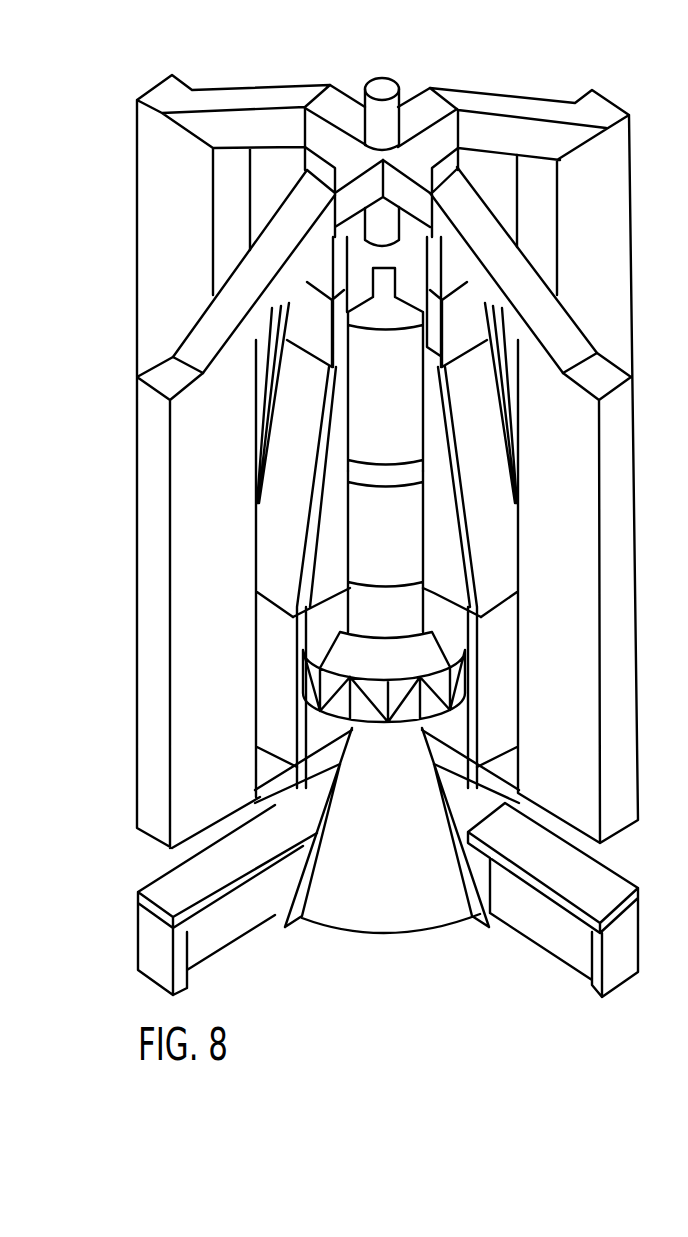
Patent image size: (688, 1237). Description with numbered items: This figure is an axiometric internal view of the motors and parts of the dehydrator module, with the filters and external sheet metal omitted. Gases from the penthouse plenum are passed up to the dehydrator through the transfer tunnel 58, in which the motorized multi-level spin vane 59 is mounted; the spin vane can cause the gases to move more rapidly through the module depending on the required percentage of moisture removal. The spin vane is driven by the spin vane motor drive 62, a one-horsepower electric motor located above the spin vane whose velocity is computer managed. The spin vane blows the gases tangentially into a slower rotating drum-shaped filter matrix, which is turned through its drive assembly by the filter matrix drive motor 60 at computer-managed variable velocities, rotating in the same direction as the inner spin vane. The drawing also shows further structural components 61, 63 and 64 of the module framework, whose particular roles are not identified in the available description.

The transfer tunnel 58 is at (372, 898).
The motorized multi-level spin vane 59 is at (400, 703).
The filter matrix drive motor 60 is at (385, 369).
The diagonal braces 61 is at (290, 432).
The spin vane motor drive 62 is at (385, 551).
The base beams 63 is at (565, 930).
The column 64 is at (200, 487).